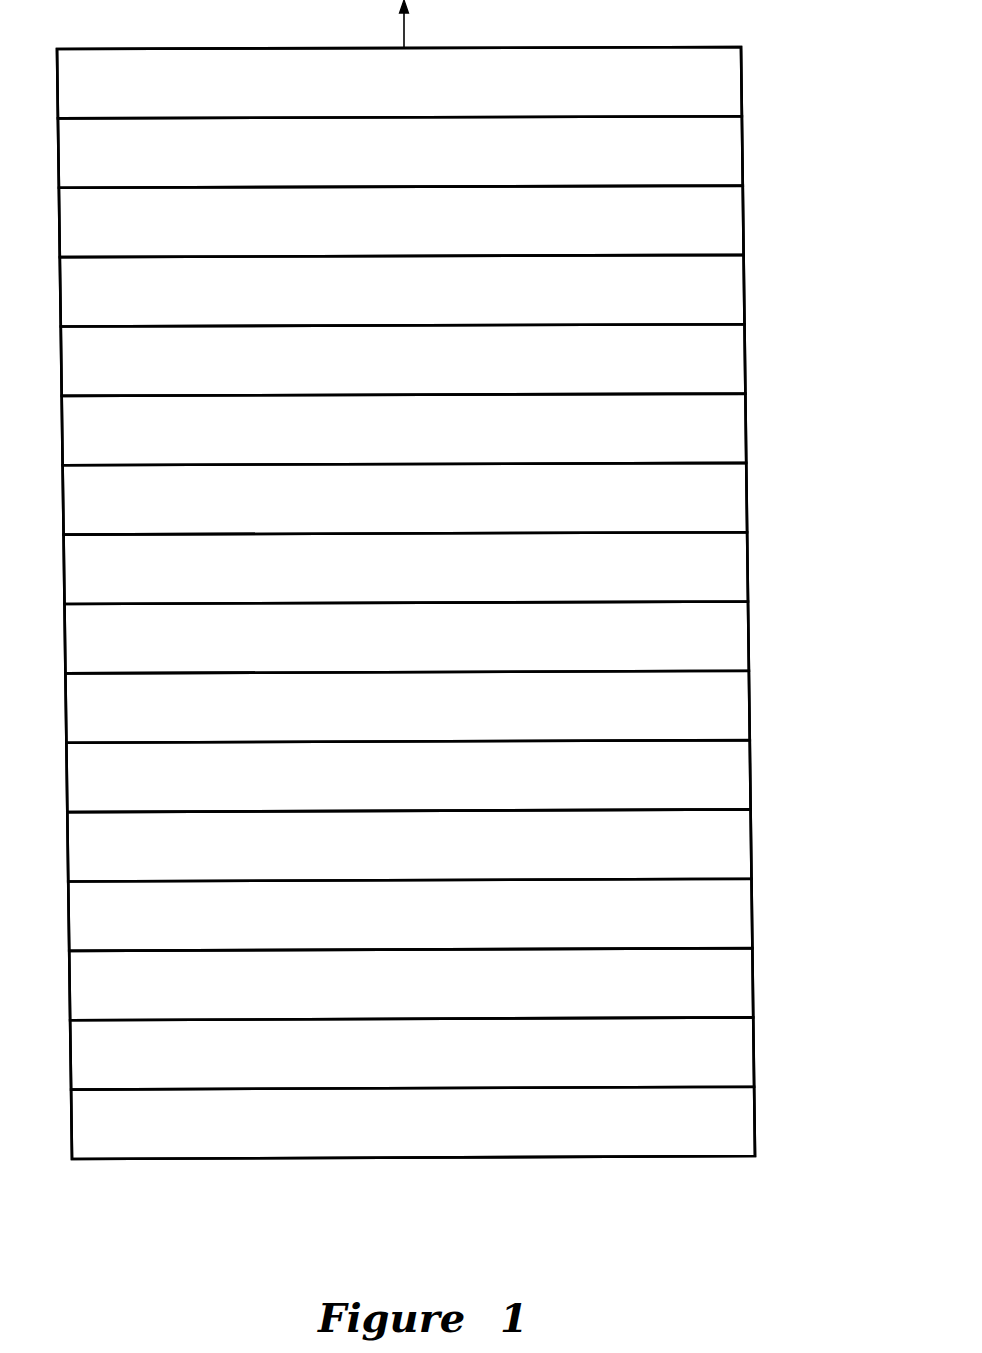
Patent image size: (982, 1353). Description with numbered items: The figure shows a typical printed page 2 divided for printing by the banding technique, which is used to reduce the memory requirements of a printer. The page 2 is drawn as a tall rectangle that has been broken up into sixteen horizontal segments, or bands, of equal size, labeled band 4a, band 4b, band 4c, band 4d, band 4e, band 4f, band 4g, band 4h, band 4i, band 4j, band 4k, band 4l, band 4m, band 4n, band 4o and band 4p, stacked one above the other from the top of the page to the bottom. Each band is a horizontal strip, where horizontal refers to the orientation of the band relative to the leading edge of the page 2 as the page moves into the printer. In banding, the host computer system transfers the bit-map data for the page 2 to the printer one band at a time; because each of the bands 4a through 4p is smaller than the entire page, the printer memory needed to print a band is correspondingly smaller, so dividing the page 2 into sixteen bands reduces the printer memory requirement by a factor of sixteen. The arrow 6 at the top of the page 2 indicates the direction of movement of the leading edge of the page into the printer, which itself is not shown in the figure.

The page 2 is at (215, 1160).
The band 4a is at (741, 78).
The band 4b is at (742, 147).
The band 4c is at (743, 216).
The band 4d is at (744, 286).
The band 4e is at (745, 355).
The band 4f is at (746, 424).
The band 4g is at (747, 493).
The band 4h is at (748, 562).
The band 4i is at (748, 632).
The band 4j is at (749, 701).
The band 4k is at (750, 770).
The band 4l is at (751, 839).
The band 4m is at (752, 908).
The band 4n is at (753, 978).
The band 4o is at (754, 1047).
The band 4p is at (754, 1116).
The arrow 6 is at (404, 30).